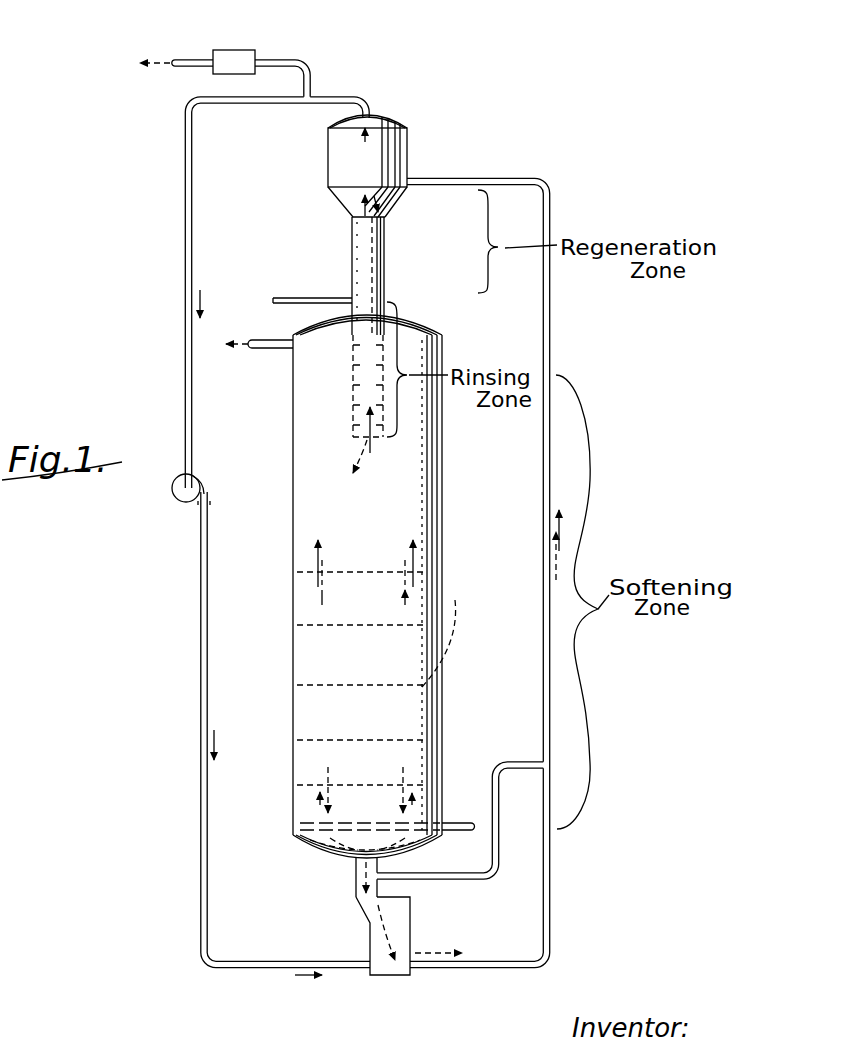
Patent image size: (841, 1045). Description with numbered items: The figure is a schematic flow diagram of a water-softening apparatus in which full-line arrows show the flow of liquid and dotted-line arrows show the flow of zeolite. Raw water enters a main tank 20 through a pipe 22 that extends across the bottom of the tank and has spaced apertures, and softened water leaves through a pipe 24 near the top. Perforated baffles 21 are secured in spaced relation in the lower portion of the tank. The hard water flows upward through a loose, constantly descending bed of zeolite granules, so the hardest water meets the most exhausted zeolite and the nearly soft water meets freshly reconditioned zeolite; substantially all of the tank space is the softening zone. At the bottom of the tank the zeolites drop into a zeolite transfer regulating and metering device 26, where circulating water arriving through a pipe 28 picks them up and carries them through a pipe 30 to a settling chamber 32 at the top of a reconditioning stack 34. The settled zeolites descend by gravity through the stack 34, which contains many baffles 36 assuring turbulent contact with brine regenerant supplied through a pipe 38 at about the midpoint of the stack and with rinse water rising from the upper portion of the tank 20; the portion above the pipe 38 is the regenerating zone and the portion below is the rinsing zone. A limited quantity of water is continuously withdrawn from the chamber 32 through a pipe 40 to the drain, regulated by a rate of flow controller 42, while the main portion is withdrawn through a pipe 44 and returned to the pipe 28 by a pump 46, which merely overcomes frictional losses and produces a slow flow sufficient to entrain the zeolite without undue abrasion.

The main tank 20 is at (427, 503).
The perforated baffles 21 is at (437, 603).
The pipe 22 is at (455, 822).
The pipe 24 is at (275, 347).
The zeolite transfer regulating and metering device 26 is at (403, 913).
The pipe 28 is at (340, 962).
The pipe 30 is at (478, 967).
The settling chamber 32 is at (405, 157).
The reconditioning stack 34 is at (385, 265).
The baffles 36 is at (378, 247).
The pipe 38 is at (302, 283).
The pipe 40 is at (282, 62).
The rate of flow controller 42 is at (235, 48).
The pipe 44 is at (185, 372).
The pump 46 is at (183, 505).